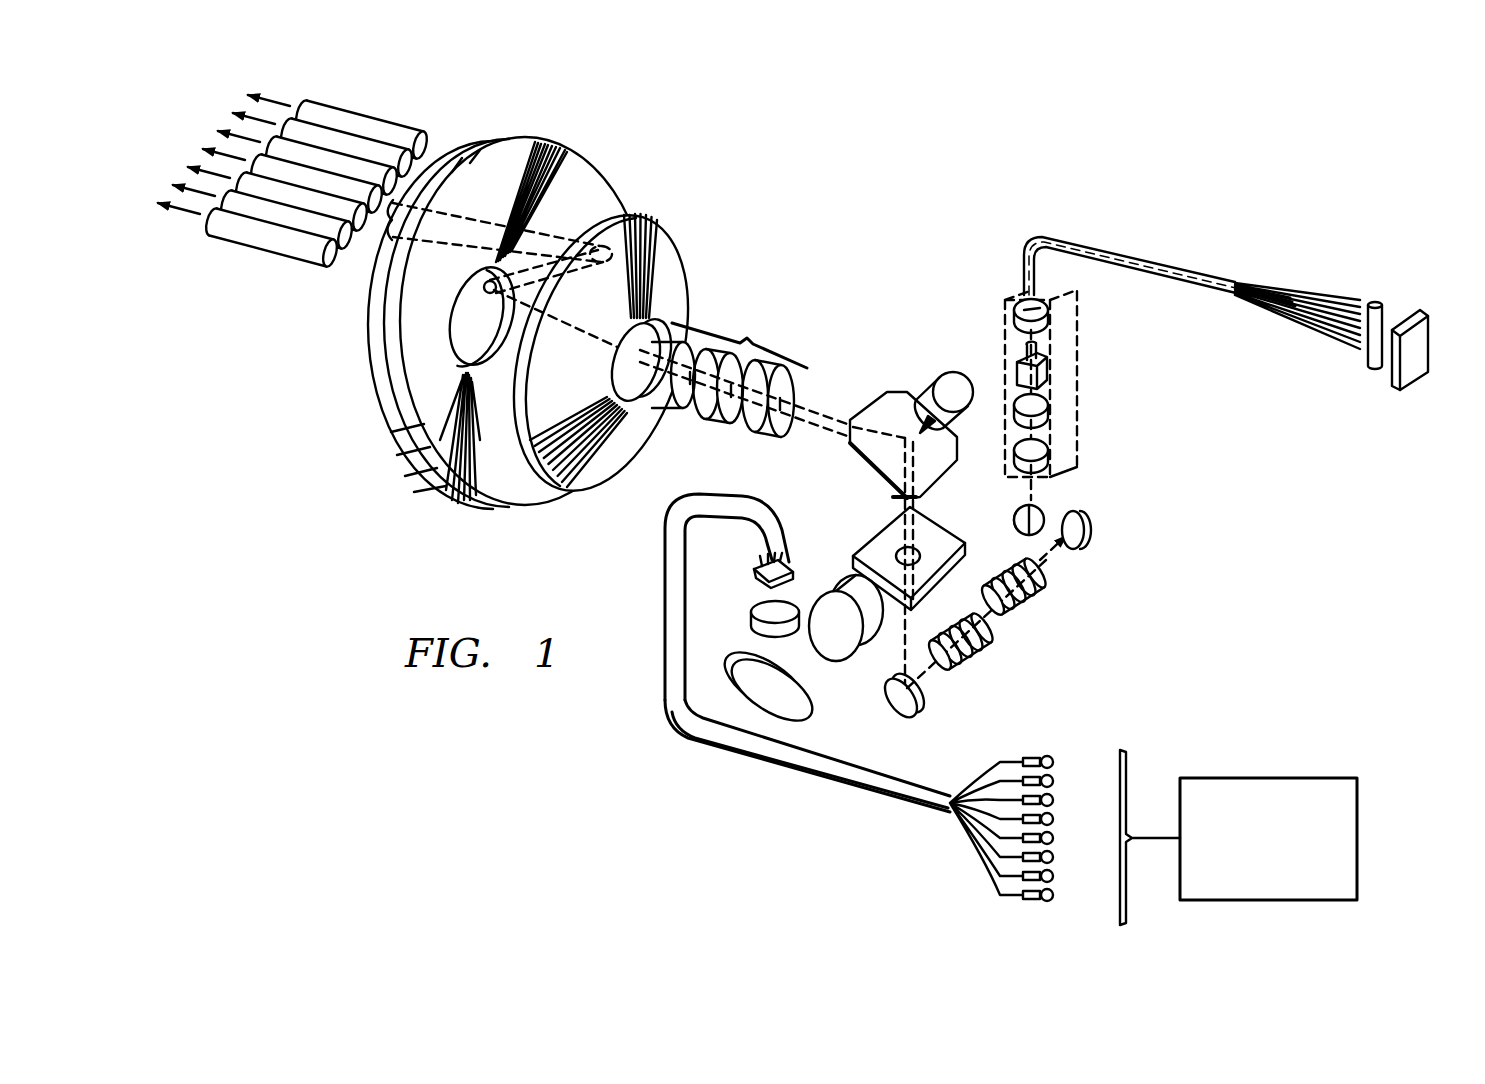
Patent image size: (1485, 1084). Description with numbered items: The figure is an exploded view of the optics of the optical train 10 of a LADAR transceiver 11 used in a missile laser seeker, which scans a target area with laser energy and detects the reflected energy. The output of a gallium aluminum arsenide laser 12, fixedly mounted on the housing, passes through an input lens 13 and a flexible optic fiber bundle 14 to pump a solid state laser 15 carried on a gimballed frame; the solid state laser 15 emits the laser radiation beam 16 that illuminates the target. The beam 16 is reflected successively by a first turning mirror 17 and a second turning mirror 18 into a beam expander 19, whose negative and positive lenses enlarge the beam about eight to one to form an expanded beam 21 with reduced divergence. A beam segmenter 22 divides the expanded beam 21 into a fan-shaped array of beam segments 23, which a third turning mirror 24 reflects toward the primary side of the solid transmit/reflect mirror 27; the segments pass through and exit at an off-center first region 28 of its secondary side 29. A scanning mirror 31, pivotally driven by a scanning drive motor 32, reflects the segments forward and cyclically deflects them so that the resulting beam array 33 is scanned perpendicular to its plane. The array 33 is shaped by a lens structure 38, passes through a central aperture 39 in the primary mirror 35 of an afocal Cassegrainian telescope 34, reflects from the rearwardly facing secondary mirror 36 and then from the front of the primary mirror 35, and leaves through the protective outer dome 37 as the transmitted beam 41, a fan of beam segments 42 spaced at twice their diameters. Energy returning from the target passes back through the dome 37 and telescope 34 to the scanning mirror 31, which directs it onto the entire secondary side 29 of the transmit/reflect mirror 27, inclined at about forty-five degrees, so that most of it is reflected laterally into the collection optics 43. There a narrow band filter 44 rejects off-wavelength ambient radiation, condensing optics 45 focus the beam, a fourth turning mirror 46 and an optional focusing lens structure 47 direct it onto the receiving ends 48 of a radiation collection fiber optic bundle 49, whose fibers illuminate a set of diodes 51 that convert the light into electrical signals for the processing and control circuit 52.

The optical train 10 is at (855, 264).
The LADAR transceiver 11 is at (1152, 156).
The laser 12 is at (1427, 343).
The input lens 13 is at (1368, 350).
The optic fiber bundle 14 is at (1282, 306).
The solid state laser 15 is at (1078, 405).
The laser radiation beam 16 is at (1020, 503).
The first turning mirror 17 is at (1046, 505).
The second turning mirror 18 is at (1077, 552).
The beam expander 19 is at (1029, 607).
The expanded beam 21 is at (985, 622).
The beam segmenter 22 is at (972, 660).
The beam segments 23 is at (898, 652).
The third turning mirror 24 is at (896, 702).
The solid transmit/reflect mirror 27 is at (889, 542).
The first region of the secondary side 28 is at (897, 546).
The secondary side 29 is at (868, 552).
The scanning mirror 31 is at (893, 405).
The scanning drive motor 32 is at (940, 388).
The beam array 33 is at (850, 424).
The afocal Cassegrainian telescope 34 is at (474, 363).
The primary mirror 35 is at (592, 478).
The secondary mirror 36 is at (481, 366).
The protective outer dome 37 is at (367, 350).
The lens structure 38 is at (745, 370).
The aperture 39 is at (645, 402).
The transmitted beam 41 is at (392, 240).
The beam segments 42 is at (395, 130).
The collection optics 43 is at (842, 670).
The narrow band filter 44 is at (827, 603).
The condensing optics 45 is at (830, 634).
The fourth turning mirror 46 is at (746, 690).
The focusing lens structure 47 is at (752, 618).
The receiving ends 48 is at (758, 572).
The radiation collection fiber optic bundle 49 is at (672, 728).
The diodes 51 is at (1054, 800).
The processing and control circuit 52 is at (1288, 778).